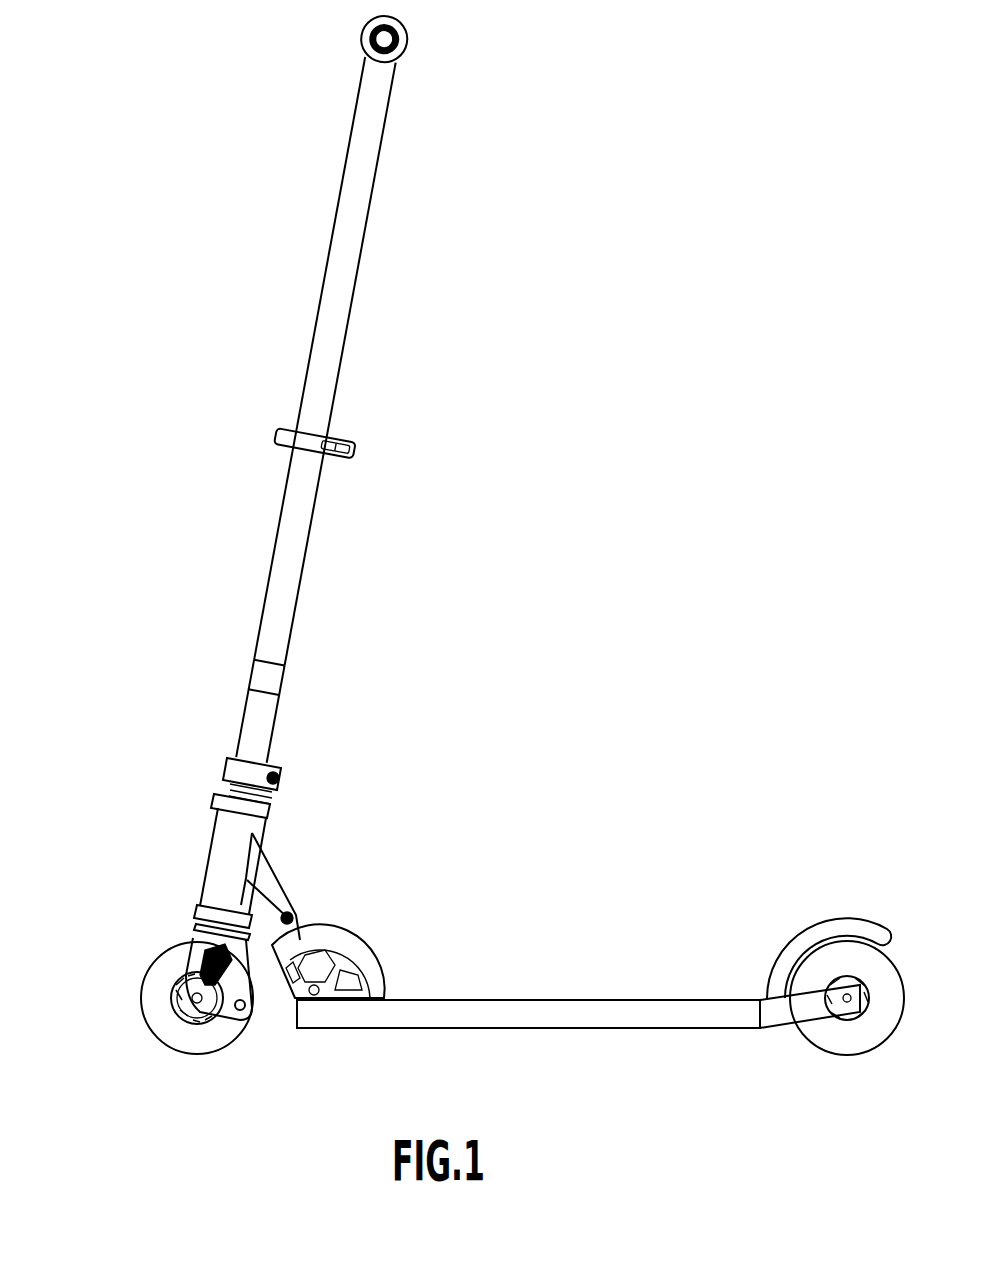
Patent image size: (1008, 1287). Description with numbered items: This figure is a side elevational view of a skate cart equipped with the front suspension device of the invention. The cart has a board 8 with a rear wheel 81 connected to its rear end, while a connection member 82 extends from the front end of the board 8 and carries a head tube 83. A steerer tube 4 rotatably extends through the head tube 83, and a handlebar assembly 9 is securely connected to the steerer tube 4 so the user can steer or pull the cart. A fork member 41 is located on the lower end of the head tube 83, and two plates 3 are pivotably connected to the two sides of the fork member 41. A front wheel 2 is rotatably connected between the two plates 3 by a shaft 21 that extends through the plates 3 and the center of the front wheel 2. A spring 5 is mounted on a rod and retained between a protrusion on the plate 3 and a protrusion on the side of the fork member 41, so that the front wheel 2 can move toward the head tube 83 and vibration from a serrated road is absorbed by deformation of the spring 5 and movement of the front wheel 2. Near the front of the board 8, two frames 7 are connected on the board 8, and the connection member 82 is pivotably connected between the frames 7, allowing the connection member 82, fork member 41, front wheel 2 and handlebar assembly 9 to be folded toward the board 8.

The handlebar assembly 9 is at (335, 333).
The steerer tube 4 is at (300, 573).
The head tube 83 is at (212, 850).
The fork member 41 is at (178, 920).
The connection member 82 is at (273, 877).
The frame 7 is at (355, 927).
The board 8 is at (627, 1000).
The rear wheel 81 is at (883, 968).
The front wheel 2 is at (160, 978).
The shaft 21 is at (177, 998).
The plate 3 is at (220, 1003).
The spring 5 is at (248, 1015).